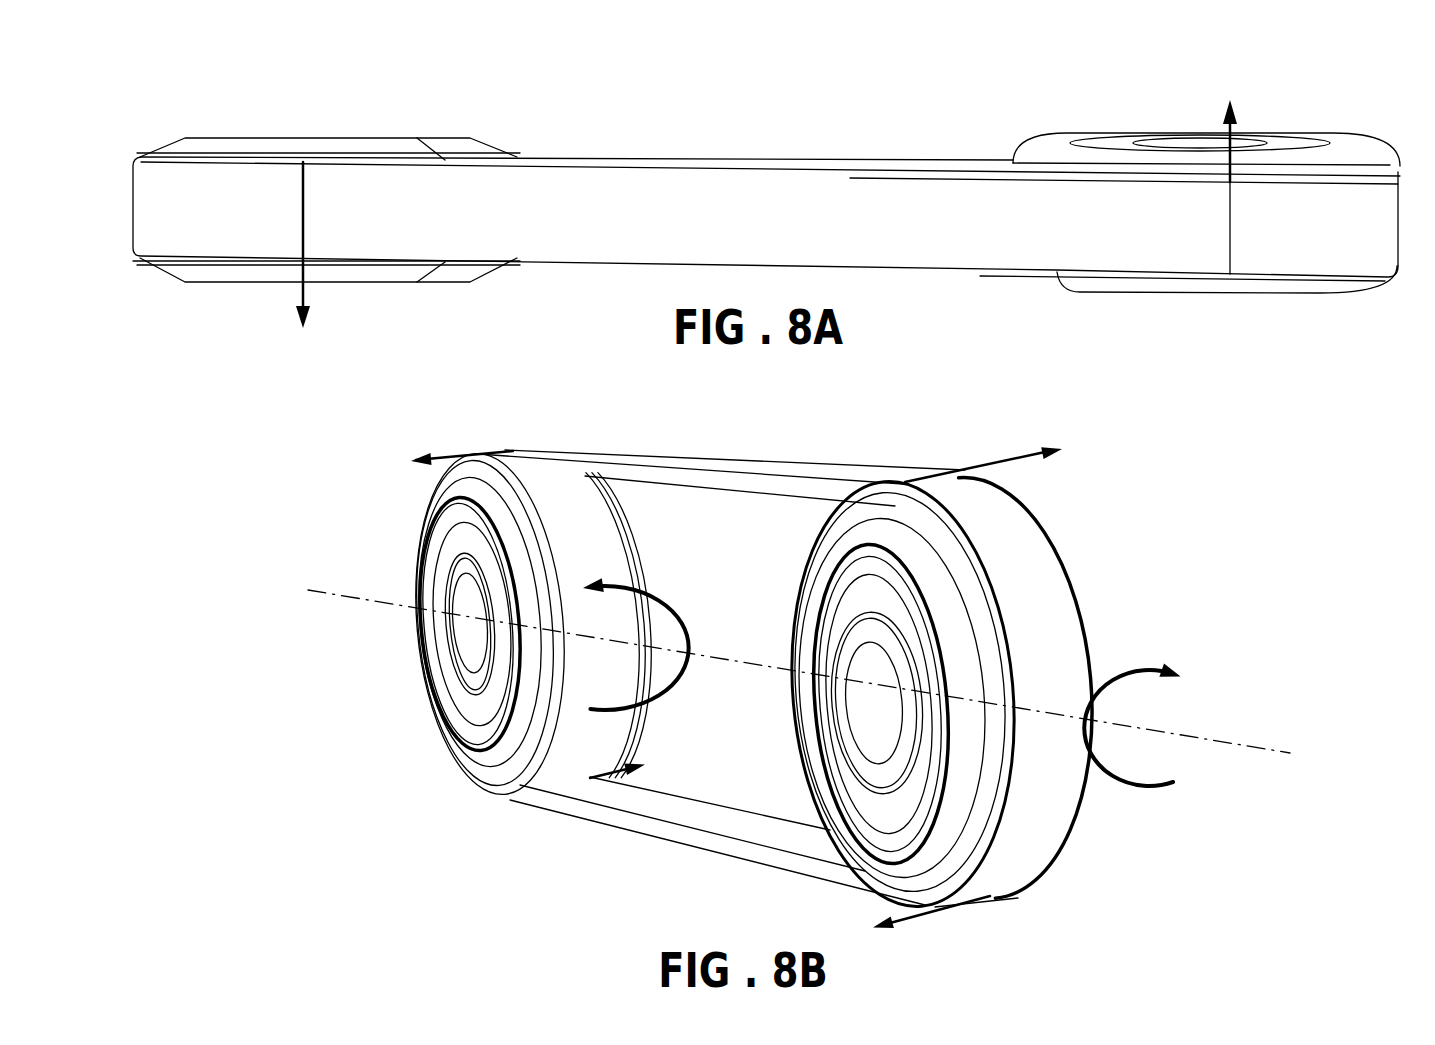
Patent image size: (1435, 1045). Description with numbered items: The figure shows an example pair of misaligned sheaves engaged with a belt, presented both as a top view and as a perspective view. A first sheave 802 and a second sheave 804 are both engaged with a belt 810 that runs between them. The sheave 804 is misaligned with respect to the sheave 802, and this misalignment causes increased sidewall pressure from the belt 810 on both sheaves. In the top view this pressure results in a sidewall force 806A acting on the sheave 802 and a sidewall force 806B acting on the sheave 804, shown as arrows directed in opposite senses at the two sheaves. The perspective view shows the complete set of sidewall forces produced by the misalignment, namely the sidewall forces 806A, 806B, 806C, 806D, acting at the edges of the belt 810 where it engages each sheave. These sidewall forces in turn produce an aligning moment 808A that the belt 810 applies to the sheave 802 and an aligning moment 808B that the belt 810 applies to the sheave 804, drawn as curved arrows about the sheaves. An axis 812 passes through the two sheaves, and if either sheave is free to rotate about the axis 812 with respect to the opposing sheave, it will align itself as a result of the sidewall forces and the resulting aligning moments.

In FIG. 8A, the sheave 802 is at (307, 150).
In FIG. 8B, the sheave 802 is at (457, 717).
In FIG. 8A, the sheave 804 is at (1100, 143).
In FIG. 8B, the sheave 804 is at (829, 589).
In FIG. 8A, the belt 810 is at (748, 180).
In FIG. 8B, the belt 810 is at (710, 464).
In FIG. 8B, the axis 812 is at (766, 651).
In FIG. 8A, the sidewall force 806A is at (298, 298).
In FIG. 8B, the sidewall force 806A is at (510, 450).
In FIG. 8A, the sidewall force 806B is at (1227, 162).
In FIG. 8B, the sidewall force 806B is at (949, 471).
In FIG. 8B, the sidewall force 806C is at (985, 893).
In FIG. 8B, the sidewall force 806D is at (600, 780).
In FIG. 8B, the aligning moment 808A is at (620, 703).
In FIG. 8B, the aligning moment 808B is at (1173, 787).